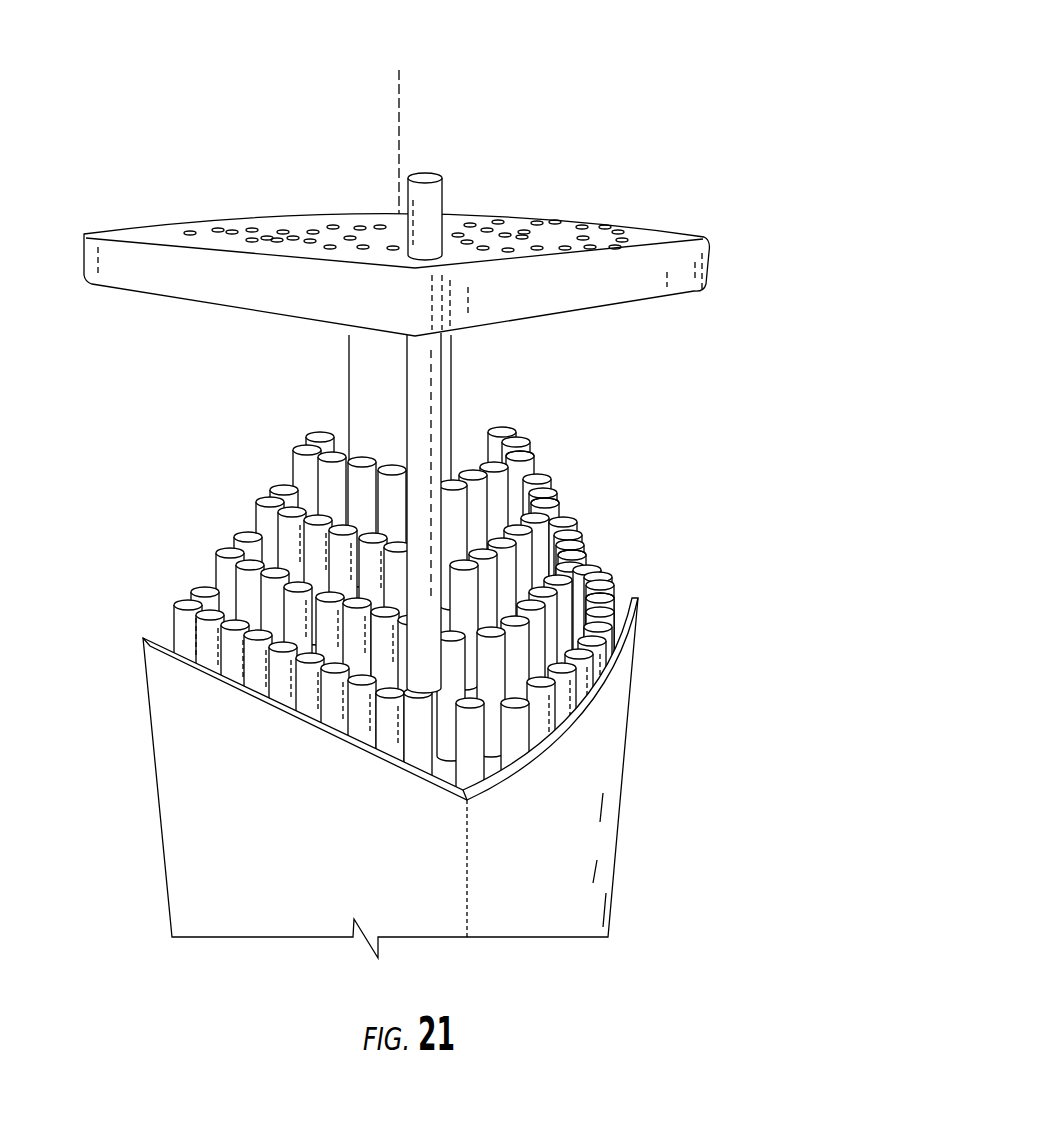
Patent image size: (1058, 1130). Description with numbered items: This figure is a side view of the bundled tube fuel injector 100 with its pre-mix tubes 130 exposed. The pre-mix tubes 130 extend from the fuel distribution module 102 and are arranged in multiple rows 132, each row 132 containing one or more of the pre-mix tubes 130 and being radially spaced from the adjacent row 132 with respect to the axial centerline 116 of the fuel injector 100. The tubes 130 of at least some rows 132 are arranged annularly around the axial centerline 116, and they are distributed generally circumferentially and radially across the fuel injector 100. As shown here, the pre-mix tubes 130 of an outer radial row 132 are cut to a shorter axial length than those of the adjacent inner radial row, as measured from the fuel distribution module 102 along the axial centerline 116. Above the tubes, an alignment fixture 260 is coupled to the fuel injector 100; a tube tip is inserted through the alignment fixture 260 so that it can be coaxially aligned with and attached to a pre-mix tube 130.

The bundled tube fuel injector 100 is at (628, 70).
The fuel distribution module 102 is at (640, 727).
The axial centerline 116 is at (400, 96).
The pre-mix tube 130 is at (533, 474).
The row 132 is at (537, 451).
The alignment fixture 260 is at (676, 237).